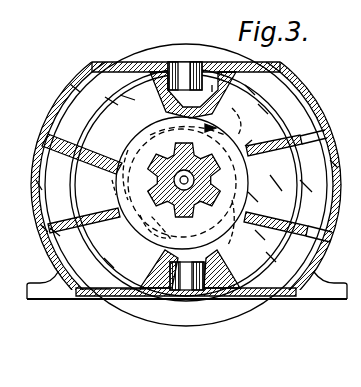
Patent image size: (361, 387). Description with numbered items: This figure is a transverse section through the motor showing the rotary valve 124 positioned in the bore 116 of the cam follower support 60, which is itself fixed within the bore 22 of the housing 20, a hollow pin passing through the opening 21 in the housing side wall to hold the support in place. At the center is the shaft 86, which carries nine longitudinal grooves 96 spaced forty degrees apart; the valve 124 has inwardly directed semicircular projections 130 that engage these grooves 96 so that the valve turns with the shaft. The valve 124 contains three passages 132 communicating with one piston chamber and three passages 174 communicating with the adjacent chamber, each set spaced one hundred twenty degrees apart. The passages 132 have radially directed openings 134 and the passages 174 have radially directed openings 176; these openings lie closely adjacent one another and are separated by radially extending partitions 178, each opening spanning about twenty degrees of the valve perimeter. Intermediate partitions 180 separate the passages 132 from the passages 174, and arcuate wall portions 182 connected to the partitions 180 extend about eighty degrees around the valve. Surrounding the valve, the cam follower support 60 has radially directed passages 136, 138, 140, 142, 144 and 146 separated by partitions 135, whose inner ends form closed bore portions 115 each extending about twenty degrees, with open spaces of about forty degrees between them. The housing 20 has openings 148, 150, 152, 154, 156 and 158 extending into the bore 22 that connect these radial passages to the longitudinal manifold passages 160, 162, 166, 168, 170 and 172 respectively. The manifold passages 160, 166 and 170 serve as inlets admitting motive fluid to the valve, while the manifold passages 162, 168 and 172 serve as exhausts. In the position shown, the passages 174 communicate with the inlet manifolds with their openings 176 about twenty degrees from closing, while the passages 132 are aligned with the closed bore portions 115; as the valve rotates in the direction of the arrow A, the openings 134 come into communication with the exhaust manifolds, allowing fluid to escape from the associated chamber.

The housing 20 is at (150, 64).
The opening 21 is at (186, 63).
The bore 22 is at (219, 88).
The cam follower support 60 is at (213, 84).
The shaft 86 is at (197, 171).
The longitudinal grooves 96 is at (254, 196).
The bore portions 115 is at (187, 181).
The bore 116 is at (165, 95).
The rotary valve 124 is at (52, 230).
The semicircular projections 130 is at (140, 233).
The passages 132 is at (158, 115).
The radially directed openings 134 is at (92, 124).
The partitions 135 is at (77, 150).
The radially directed passage 136 is at (262, 108).
The radially directed passage 138 is at (275, 183).
The radially directed passage 140 is at (262, 238).
The radially directed passage 142 is at (108, 263).
The radially directed passage 144 is at (112, 188).
The radially directed passage 146 is at (128, 97).
The opening 148 is at (250, 90).
The opening 150 is at (302, 185).
The opening 152 is at (272, 258).
The opening 154 is at (132, 284).
The opening 156 is at (44, 227).
The opening 158 is at (112, 100).
The inlet manifold passage 160 is at (297, 90).
The exhaust manifold passage 162 is at (333, 163).
The inlet manifold passage 166 is at (289, 294).
The exhaust manifold passage 168 is at (105, 290).
The inlet manifold passage 170 is at (38, 183).
The exhaust manifold passage 172 is at (76, 87).
The passages 174 is at (116, 168).
The radially directed openings 176 is at (110, 184).
The radially extending partitions 178 is at (80, 165).
The intermediate partitions 180 is at (170, 200).
The arcuate wall portions 182 is at (128, 128).
The arrow A is at (186, 134).